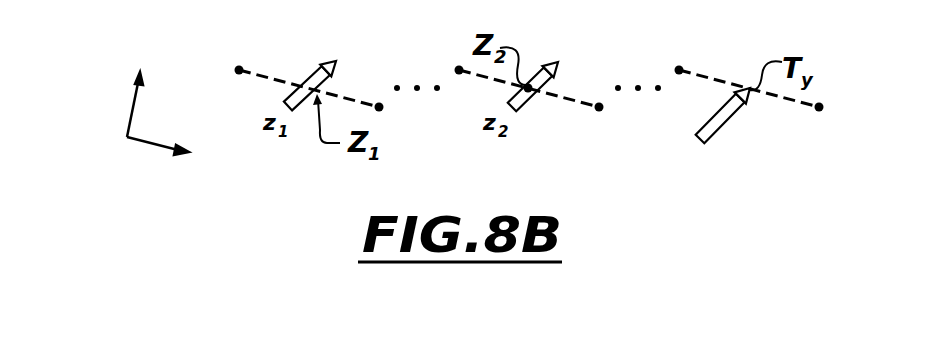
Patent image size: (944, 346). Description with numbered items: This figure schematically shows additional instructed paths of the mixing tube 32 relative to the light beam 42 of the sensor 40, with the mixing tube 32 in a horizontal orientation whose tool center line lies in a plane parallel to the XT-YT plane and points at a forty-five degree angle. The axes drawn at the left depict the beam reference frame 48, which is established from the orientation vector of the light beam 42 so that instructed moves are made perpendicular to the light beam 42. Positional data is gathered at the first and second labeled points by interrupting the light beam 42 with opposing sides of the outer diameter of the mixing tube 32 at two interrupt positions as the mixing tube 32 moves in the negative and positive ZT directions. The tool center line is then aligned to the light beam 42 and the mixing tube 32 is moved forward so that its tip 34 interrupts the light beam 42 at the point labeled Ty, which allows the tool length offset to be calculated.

The mixing tube 32 is at (297, 112).
The tip 34 is at (334, 62).
The sensor 40 is at (381, 112).
The light beam 42 is at (353, 92).
The beam reference frame 48 is at (132, 111).